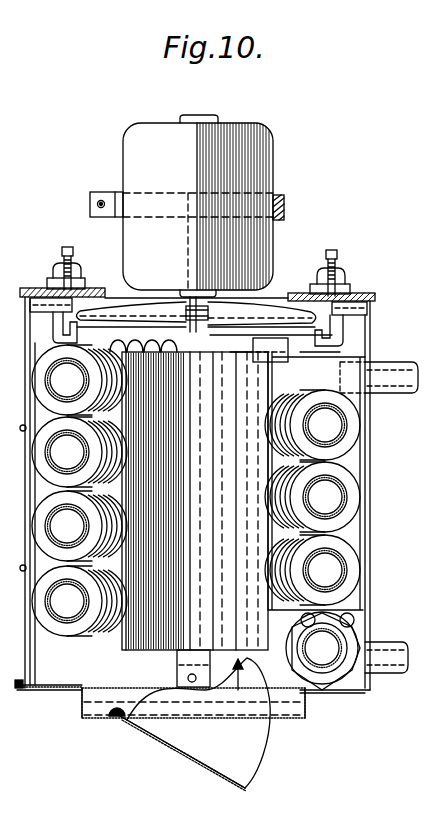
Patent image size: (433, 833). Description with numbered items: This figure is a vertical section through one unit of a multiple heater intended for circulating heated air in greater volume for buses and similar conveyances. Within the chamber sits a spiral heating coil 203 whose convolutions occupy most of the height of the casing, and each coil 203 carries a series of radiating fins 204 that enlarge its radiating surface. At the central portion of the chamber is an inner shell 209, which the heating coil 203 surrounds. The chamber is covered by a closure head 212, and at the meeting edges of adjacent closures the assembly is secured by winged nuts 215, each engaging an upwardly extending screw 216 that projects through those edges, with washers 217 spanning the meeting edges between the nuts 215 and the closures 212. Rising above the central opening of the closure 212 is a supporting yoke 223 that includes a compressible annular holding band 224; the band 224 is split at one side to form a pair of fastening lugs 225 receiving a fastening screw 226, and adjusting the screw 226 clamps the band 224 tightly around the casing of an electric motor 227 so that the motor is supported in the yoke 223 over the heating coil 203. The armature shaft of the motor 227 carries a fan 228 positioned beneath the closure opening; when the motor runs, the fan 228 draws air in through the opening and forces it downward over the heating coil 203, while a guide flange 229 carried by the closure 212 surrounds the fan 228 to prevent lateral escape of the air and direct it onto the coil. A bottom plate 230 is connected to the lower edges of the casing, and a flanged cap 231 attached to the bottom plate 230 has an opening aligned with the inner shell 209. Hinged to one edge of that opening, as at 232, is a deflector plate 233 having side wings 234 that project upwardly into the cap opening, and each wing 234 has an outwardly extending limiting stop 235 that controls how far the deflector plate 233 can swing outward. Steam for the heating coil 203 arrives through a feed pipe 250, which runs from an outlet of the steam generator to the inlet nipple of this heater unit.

The spiral heating coil 203 is at (345, 565).
The radiating fins 204 is at (352, 490).
The inner shell 209 is at (268, 487).
The closure head 212 is at (97, 290).
The winged nut 215 is at (57, 268).
The screw 216 is at (66, 250).
The washer 217 is at (50, 284).
The supporting yoke 223 is at (188, 244).
The holding band 224 is at (285, 206).
The fastening lugs 225 is at (90, 206).
The fastening screw 226 is at (101, 200).
The electric motor 227 is at (137, 148).
The fan 228 is at (150, 296).
The guide flange 229 is at (368, 316).
The bottom plate 230 is at (47, 690).
The flanged cap 231 is at (306, 712).
The hinge connection 232 is at (117, 724).
The deflector plate 233 is at (206, 763).
The side wings 234 is at (252, 742).
The limiting stop 235 is at (245, 680).
The feed pipe 250 is at (400, 365).